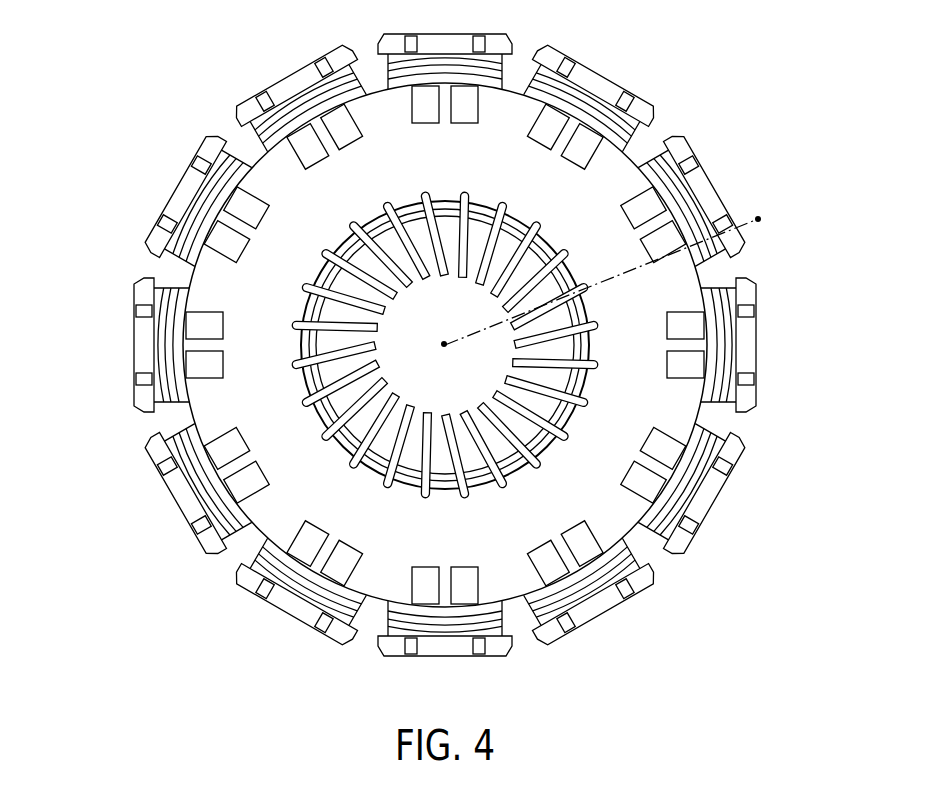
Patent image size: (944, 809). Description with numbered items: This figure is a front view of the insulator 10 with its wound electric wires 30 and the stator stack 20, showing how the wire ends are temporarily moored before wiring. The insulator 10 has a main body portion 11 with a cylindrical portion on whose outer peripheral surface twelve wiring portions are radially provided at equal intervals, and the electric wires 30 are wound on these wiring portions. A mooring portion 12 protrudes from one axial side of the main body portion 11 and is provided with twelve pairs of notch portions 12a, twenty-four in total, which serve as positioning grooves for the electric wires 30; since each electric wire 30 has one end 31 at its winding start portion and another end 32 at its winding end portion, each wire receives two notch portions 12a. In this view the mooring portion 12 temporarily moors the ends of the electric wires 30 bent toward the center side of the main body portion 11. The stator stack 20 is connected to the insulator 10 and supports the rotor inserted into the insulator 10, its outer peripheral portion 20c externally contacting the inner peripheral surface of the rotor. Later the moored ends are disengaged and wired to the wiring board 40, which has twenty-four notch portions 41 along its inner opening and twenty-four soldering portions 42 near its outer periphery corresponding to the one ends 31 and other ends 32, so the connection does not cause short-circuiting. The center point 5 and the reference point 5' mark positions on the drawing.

The insulator 10 is at (122, 560).
The main body portion 11 is at (150, 442).
The mooring portion 12 is at (352, 453).
The notch portions 12a is at (347, 470).
The stator stack 20 is at (785, 568).
The outer peripheral portion 20c is at (708, 497).
The electric wire 30 is at (630, 125).
The one end 31 is at (573, 267).
The other end 32 is at (595, 322).
The wiring board 40 is at (245, 153).
The notch portions 41 is at (303, 377).
The soldering portions 42 is at (193, 363).
The rotation center 5 is at (433, 353).
The reference point 5' is at (619, 272).